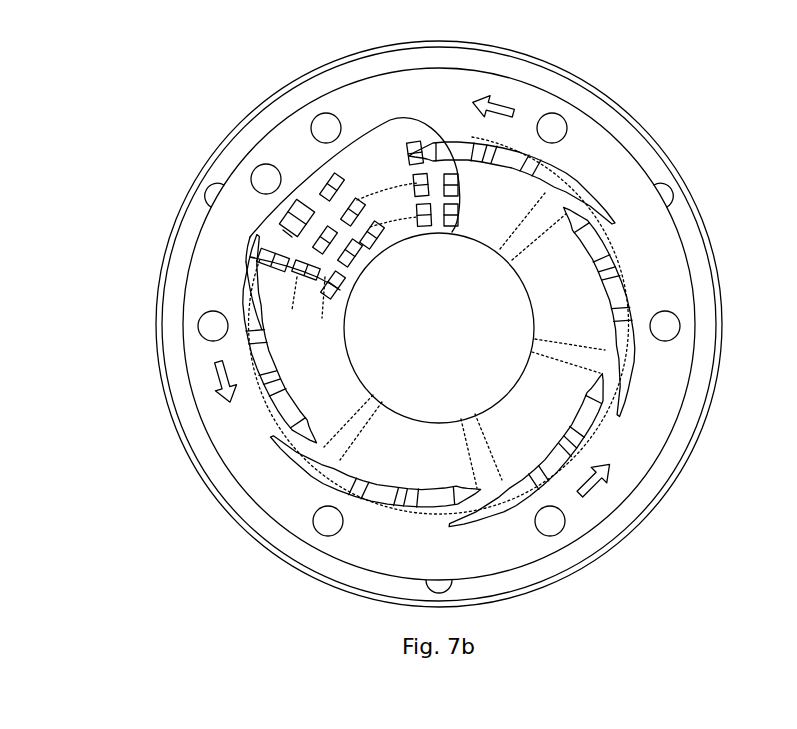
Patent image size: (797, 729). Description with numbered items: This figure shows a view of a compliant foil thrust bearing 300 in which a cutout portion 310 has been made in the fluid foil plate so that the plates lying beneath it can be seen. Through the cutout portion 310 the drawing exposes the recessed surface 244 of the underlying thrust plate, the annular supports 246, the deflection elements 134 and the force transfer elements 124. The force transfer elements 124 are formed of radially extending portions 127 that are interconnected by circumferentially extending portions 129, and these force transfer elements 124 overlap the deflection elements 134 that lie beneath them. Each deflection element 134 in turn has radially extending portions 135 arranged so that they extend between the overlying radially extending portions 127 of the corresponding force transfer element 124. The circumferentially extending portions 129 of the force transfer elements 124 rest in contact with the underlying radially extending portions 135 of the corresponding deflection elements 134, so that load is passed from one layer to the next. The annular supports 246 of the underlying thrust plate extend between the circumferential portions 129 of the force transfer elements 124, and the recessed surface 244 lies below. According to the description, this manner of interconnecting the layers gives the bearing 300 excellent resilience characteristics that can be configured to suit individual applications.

The compliant foil thrust bearing 300 is at (178, 121).
The cutout portion 310 is at (368, 117).
The radially extending portions 127 is at (313, 227).
The deflection elements 134 is at (270, 243).
The circumferentially extending portions 129 is at (270, 243).
The radially extending portions 135 is at (270, 253).
The force transfer elements 124 is at (270, 272).
The annular supports 246 is at (300, 298).
The recessed surface 244 is at (307, 315).